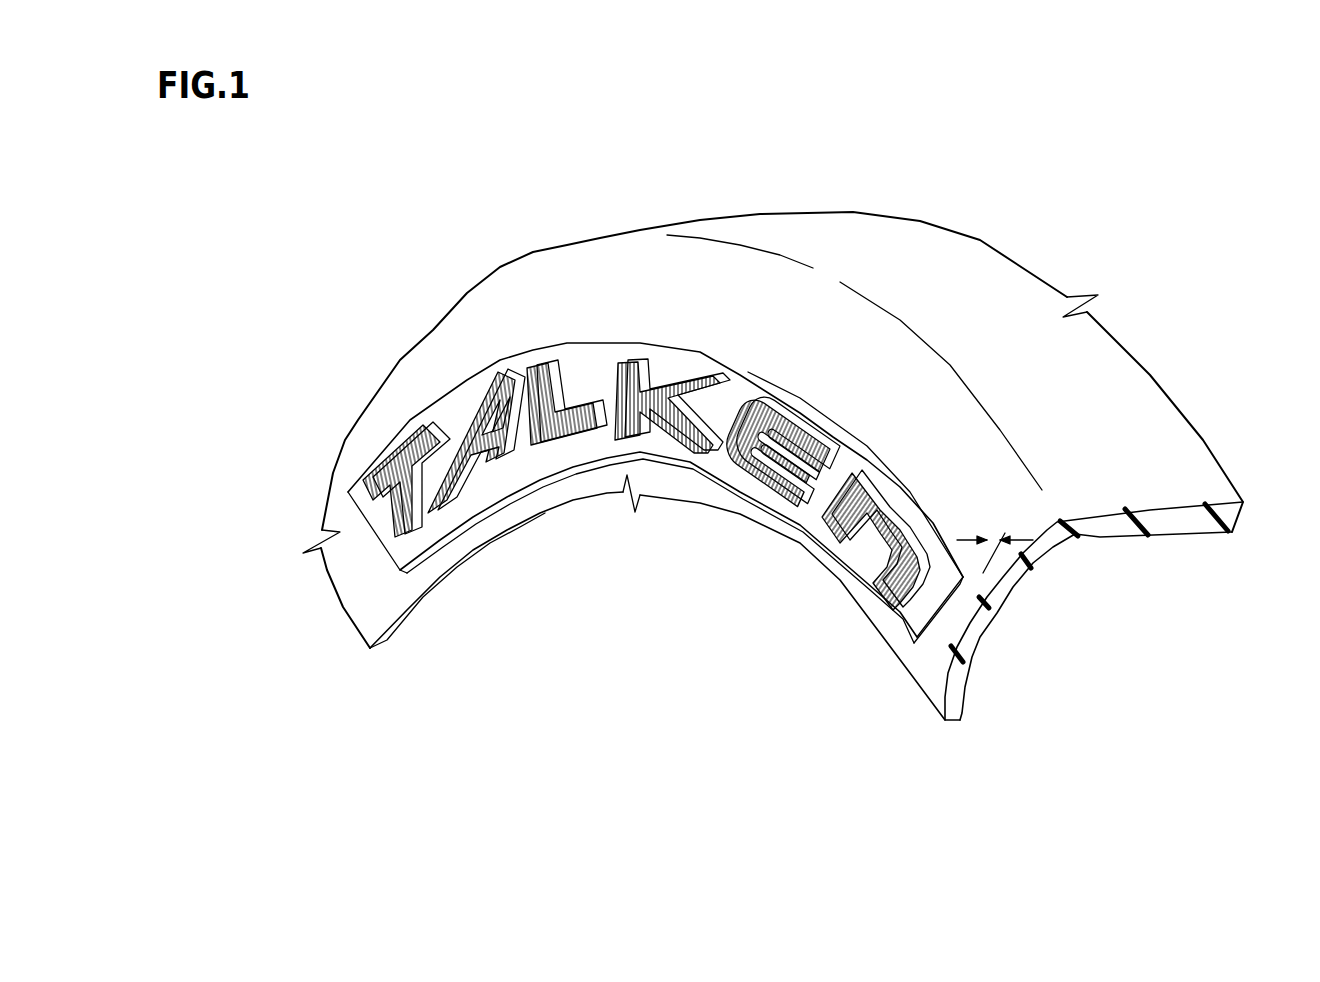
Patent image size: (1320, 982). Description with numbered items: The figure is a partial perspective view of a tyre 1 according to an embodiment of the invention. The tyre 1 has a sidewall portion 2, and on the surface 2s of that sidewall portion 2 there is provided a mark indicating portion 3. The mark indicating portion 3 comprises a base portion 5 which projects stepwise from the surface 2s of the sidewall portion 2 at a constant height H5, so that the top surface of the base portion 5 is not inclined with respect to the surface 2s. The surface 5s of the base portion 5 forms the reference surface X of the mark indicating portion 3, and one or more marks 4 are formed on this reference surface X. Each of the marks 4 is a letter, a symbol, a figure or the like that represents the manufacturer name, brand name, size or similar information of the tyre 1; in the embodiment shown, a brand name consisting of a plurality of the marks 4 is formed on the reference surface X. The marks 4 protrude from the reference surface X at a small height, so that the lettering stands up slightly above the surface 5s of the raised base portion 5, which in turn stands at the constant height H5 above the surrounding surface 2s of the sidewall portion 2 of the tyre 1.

The tyre 1 is at (773, 427).
The sidewall portion 2 is at (806, 597).
The surface of the sidewall portion 2s is at (938, 637).
The mark indicating portion 3 is at (577, 343).
The mark 4 is at (646, 384).
The base portion 5 is at (646, 375).
The surface of the base portion 5s is at (605, 368).
The reference surface X is at (661, 302).
The height of the base portion H5 is at (973, 573).